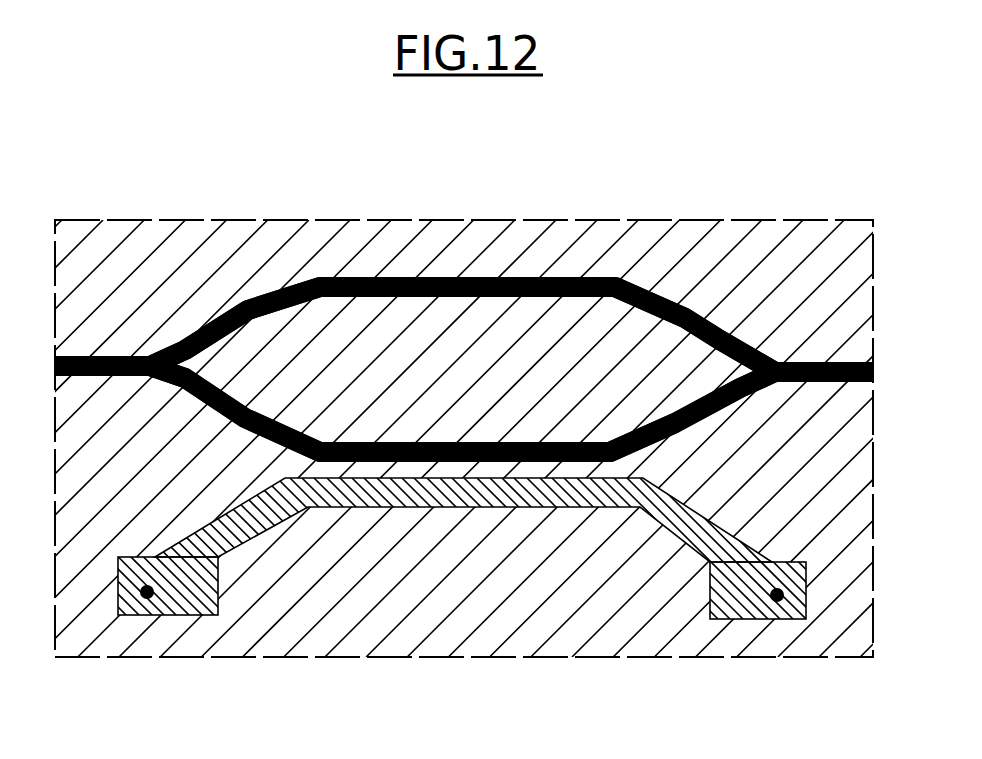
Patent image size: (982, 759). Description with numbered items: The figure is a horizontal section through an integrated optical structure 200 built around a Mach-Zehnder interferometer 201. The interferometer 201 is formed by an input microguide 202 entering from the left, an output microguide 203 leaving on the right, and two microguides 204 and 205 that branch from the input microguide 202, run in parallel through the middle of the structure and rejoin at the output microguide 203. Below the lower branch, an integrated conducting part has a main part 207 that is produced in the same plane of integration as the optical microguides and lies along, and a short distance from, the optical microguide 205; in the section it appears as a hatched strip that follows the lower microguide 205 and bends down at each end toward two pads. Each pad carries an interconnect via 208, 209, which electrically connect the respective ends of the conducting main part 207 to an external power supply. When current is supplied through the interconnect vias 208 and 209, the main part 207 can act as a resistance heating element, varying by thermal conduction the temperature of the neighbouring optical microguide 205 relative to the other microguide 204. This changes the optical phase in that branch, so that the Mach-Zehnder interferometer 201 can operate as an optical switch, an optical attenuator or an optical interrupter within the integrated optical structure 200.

The integrated optical structure 200 is at (280, 212).
The Mach-Zehnder interferometer 201 is at (641, 280).
The input microguide 202 is at (103, 357).
The output microguide 203 is at (818, 361).
The microguide 204 is at (583, 278).
The optical microguide 205 is at (417, 443).
The main part 207 is at (397, 508).
The interconnect via 208 is at (147, 597).
The interconnect via 209 is at (777, 600).